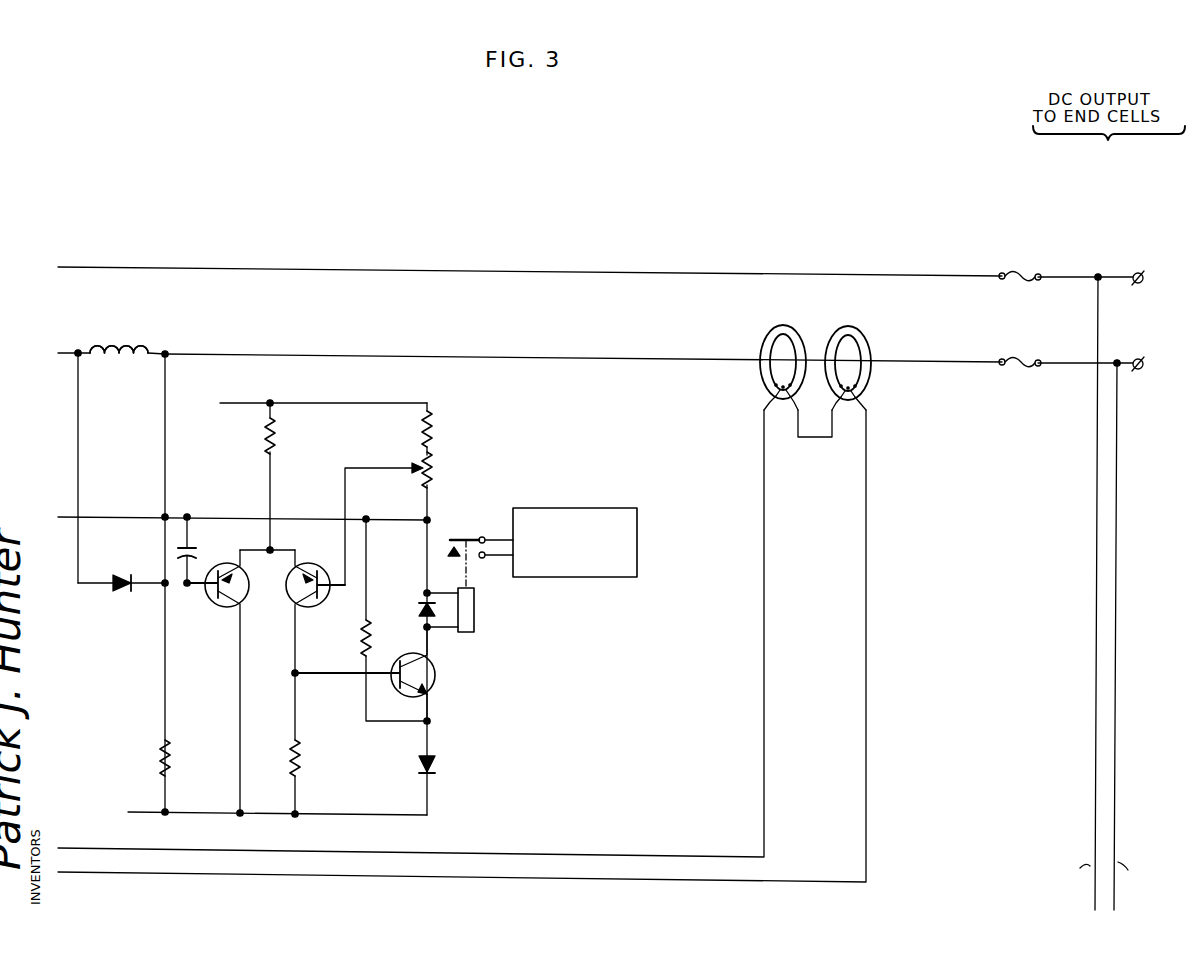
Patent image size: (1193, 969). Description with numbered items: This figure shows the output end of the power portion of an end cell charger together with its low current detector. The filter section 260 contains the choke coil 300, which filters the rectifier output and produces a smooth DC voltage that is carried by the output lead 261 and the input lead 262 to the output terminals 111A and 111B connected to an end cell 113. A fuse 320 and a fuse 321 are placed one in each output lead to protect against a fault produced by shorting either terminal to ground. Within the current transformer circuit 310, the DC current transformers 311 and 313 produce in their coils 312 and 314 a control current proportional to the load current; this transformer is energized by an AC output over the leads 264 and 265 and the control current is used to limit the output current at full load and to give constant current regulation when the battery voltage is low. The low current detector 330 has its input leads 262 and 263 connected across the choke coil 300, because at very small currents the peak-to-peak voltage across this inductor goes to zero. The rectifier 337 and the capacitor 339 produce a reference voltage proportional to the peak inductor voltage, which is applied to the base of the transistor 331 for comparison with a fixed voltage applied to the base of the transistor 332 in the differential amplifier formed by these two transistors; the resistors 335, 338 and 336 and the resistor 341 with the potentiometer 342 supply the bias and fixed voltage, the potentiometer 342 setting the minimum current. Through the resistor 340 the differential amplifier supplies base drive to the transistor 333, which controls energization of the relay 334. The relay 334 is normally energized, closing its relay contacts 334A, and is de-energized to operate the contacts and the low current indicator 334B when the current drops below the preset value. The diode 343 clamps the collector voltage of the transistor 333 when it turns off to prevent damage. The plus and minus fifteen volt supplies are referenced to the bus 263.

The filter section 260 is at (166, 118).
The choke coil 300 is at (119, 364).
The low current detector 330 is at (340, 118).
The current transformer circuit 310 is at (918, 122).
The output lead 261 is at (116, 264).
The input lead 262 is at (76, 343).
The input lead 263 is at (177, 392).
The fuse 320 is at (1019, 266).
The fuse 321 is at (1019, 352).
The output terminal 111A is at (1126, 279).
The output terminal 111B is at (1128, 365).
The end cell 113 is at (1119, 593).
The DC current transformer 311 is at (783, 350).
The DC current transformer 313 is at (848, 350).
The coil 312 is at (760, 403).
The coil 314 is at (868, 403).
The lead 264 is at (756, 492).
The lead 265 is at (870, 495).
The rectifier 337 is at (123, 596).
The capacitor 339 is at (166, 551).
The resistor 335 is at (290, 428).
The resistor 341 is at (447, 429).
The potentiometer 342 is at (401, 518).
The resistor 340 is at (375, 621).
The resistor 338 is at (183, 758).
The resistor 336 is at (313, 709).
The transistor 331 is at (215, 681).
The transistor 332 is at (320, 585).
The transistor 333 is at (383, 674).
The diode 343 is at (409, 610).
The relay 334 is at (473, 586).
The relay contacts 334A is at (442, 541).
The low current indicator 334B is at (551, 505).